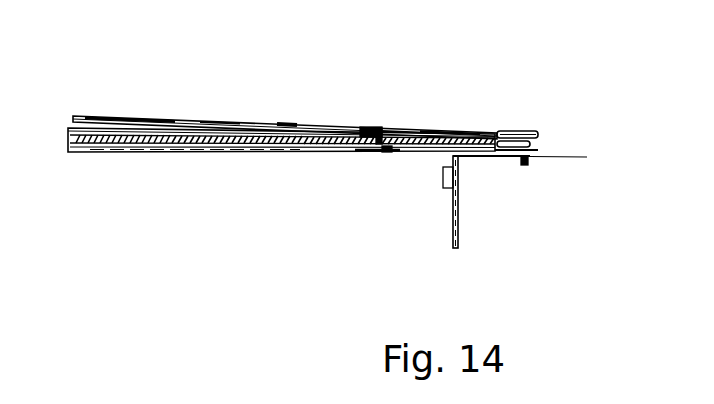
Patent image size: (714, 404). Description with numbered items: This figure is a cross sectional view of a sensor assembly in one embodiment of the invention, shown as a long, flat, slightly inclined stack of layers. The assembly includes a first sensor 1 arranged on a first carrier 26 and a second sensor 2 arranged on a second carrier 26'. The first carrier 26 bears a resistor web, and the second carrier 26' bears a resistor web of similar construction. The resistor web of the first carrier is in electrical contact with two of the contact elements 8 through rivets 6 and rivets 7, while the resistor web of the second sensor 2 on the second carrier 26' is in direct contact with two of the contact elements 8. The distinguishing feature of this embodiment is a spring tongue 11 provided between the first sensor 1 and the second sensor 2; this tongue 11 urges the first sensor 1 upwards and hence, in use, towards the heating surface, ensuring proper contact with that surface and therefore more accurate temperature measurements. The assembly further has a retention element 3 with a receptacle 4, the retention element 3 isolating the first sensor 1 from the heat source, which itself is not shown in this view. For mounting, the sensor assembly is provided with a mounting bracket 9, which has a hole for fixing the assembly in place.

The first sensor 1 is at (155, 90).
The second sensor 2 is at (151, 175).
The retention element 3 is at (72, 117).
The receptacle 4 is at (83, 118).
The rivets 6 is at (523, 130).
The rivets 7 is at (520, 158).
The contact elements 8 is at (583, 159).
The mounting bracket 9 is at (460, 235).
The spring tongue 11 is at (368, 155).
The first carrier 26 is at (422, 96).
The second carrier 26' is at (396, 182).